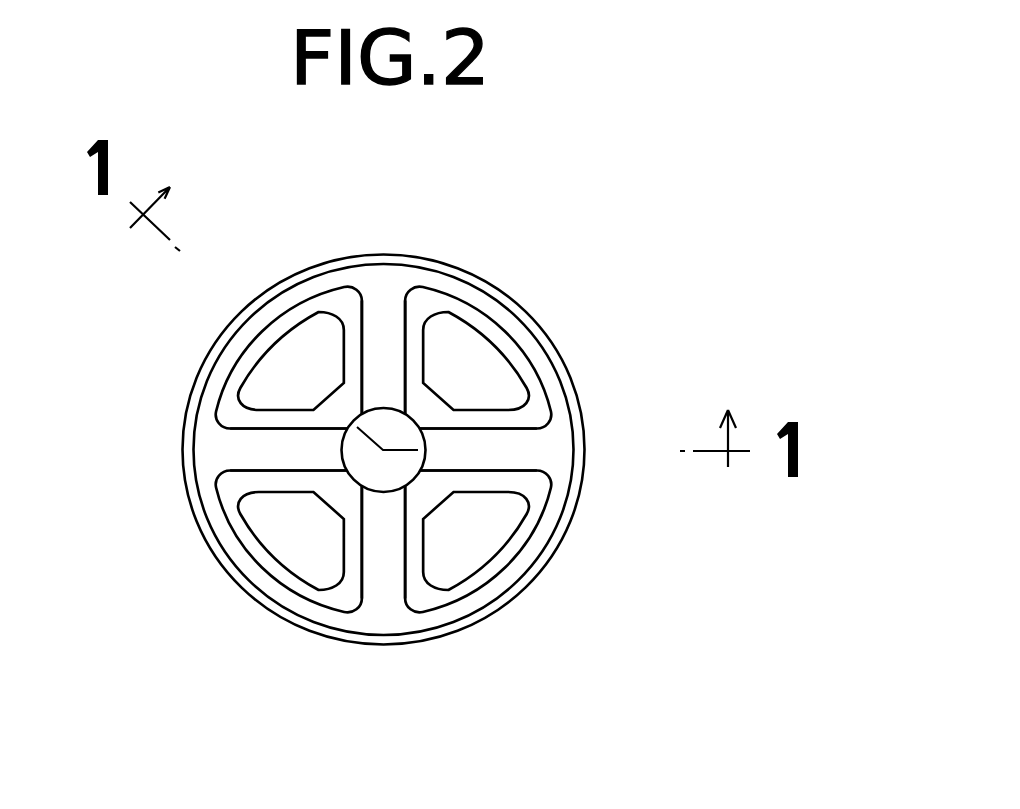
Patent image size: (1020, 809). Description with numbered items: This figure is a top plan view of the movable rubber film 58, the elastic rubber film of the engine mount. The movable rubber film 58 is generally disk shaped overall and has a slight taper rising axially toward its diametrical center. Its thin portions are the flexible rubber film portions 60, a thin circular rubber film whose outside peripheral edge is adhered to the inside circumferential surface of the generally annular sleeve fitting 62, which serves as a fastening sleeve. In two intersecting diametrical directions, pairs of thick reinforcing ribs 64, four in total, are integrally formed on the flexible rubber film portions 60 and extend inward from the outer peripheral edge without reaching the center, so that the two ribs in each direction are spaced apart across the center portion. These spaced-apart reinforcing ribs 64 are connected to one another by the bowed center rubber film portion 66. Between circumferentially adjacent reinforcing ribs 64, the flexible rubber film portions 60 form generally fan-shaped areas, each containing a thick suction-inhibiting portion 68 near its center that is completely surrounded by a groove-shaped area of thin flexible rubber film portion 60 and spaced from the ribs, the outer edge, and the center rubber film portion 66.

The movable rubber film 58 is at (579, 212).
The flexible rubber film portions 60 is at (352, 368).
The sleeve fitting 62 is at (188, 478).
The reinforcing ribs 64 is at (383, 322).
The center rubber film portion 66 is at (383, 430).
The suction-inhibiting portions 68 is at (303, 368).